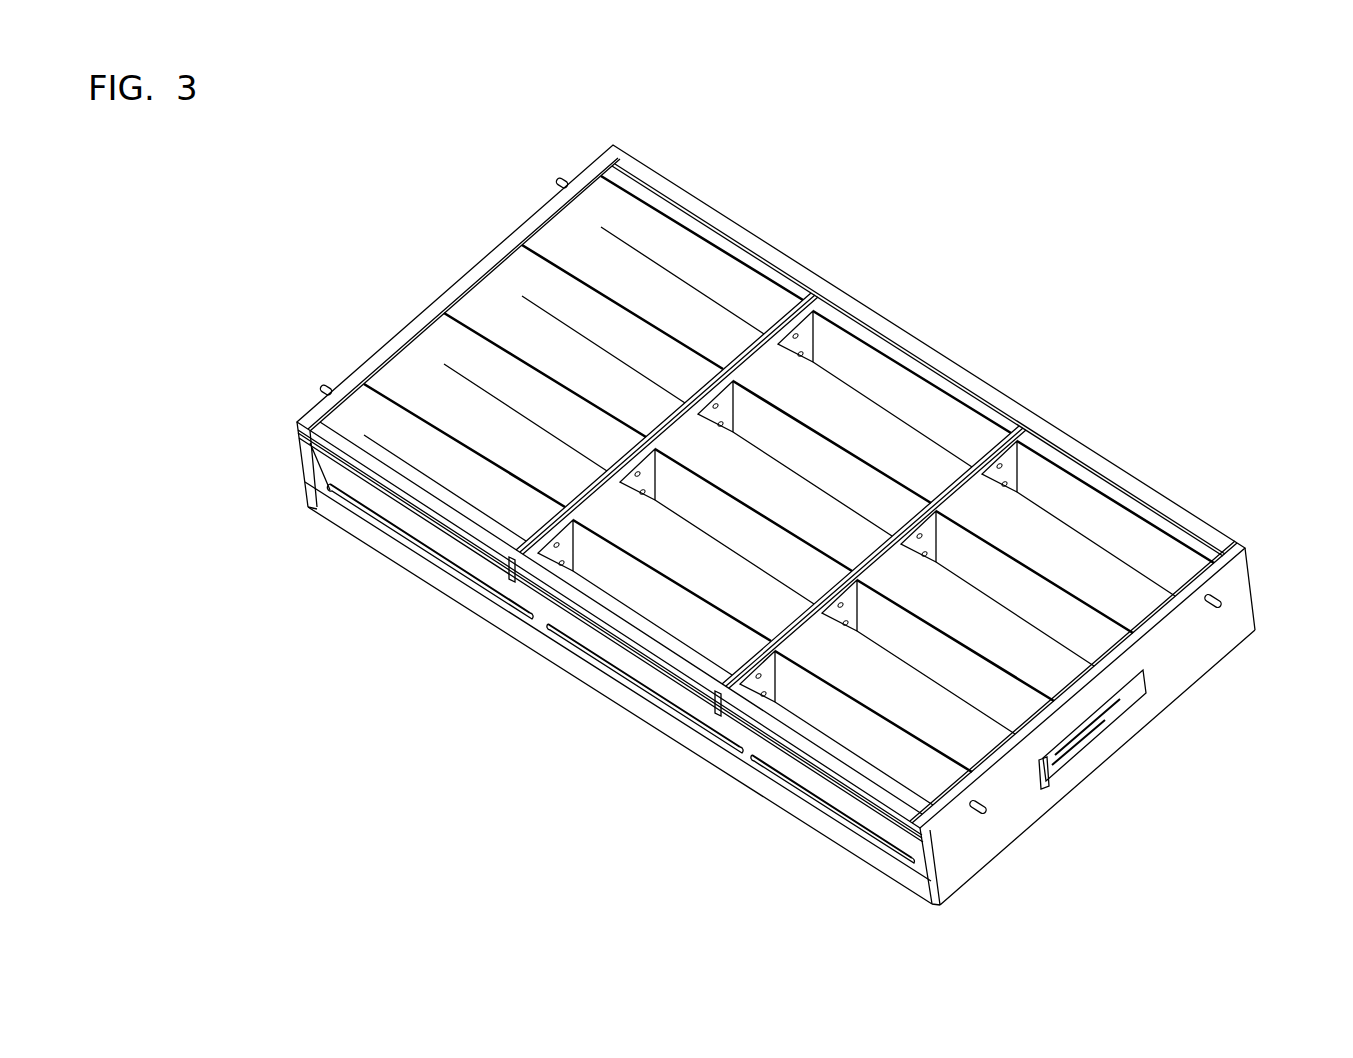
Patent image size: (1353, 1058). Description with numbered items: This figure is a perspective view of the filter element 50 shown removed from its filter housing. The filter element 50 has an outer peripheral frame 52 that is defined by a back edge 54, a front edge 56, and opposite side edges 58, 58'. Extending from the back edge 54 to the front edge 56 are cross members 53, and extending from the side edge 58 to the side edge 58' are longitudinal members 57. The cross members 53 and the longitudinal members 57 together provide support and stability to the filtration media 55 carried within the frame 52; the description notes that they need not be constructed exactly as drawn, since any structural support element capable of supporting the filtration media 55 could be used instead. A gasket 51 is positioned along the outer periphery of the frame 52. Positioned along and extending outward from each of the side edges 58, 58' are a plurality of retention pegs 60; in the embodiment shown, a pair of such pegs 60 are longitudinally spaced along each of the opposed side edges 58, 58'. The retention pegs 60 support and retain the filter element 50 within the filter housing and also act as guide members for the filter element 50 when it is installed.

The filter element 50 is at (1092, 232).
The gasket 51 is at (1198, 510).
The outer peripheral frame 52 is at (753, 232).
The cross members 53 is at (949, 487).
The back edge 54 is at (880, 313).
The filtration media 55 is at (655, 262).
The front edge 56 is at (475, 608).
The longitudinal members 57 is at (1068, 528).
The side edge 58 is at (1087, 743).
The side edge 58' is at (458, 333).
The retention pegs 60 is at (560, 180).